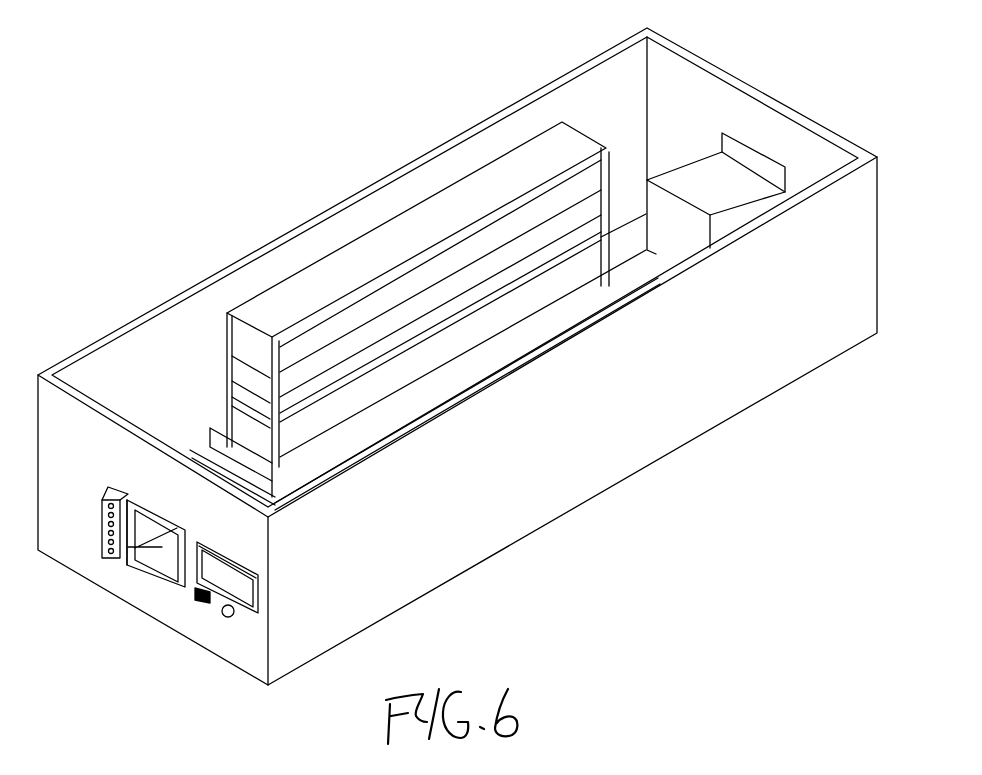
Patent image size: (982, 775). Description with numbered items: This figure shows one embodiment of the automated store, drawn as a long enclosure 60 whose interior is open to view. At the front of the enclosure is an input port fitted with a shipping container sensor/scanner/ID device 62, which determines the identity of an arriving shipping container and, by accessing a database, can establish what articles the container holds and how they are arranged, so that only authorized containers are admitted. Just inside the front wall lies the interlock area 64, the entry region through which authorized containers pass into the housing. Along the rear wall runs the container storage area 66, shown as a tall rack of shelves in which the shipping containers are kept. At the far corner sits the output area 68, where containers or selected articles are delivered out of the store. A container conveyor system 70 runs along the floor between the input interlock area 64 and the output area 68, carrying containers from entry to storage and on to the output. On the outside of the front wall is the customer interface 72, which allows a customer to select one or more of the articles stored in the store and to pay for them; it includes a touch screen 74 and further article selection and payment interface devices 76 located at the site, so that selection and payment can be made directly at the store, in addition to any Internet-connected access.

The enclosure housing 60 is at (110, 452).
The shipping container sensor/scanner/ID device 62 is at (103, 521).
The interlock area 64 is at (197, 457).
The container storage area 66 is at (417, 250).
The output area 68 is at (690, 177).
The container conveyor system 70 is at (473, 373).
The customer interface 72 is at (250, 537).
The touch screen 74 is at (233, 616).
The article selection and payment interface devices 76 is at (206, 603).